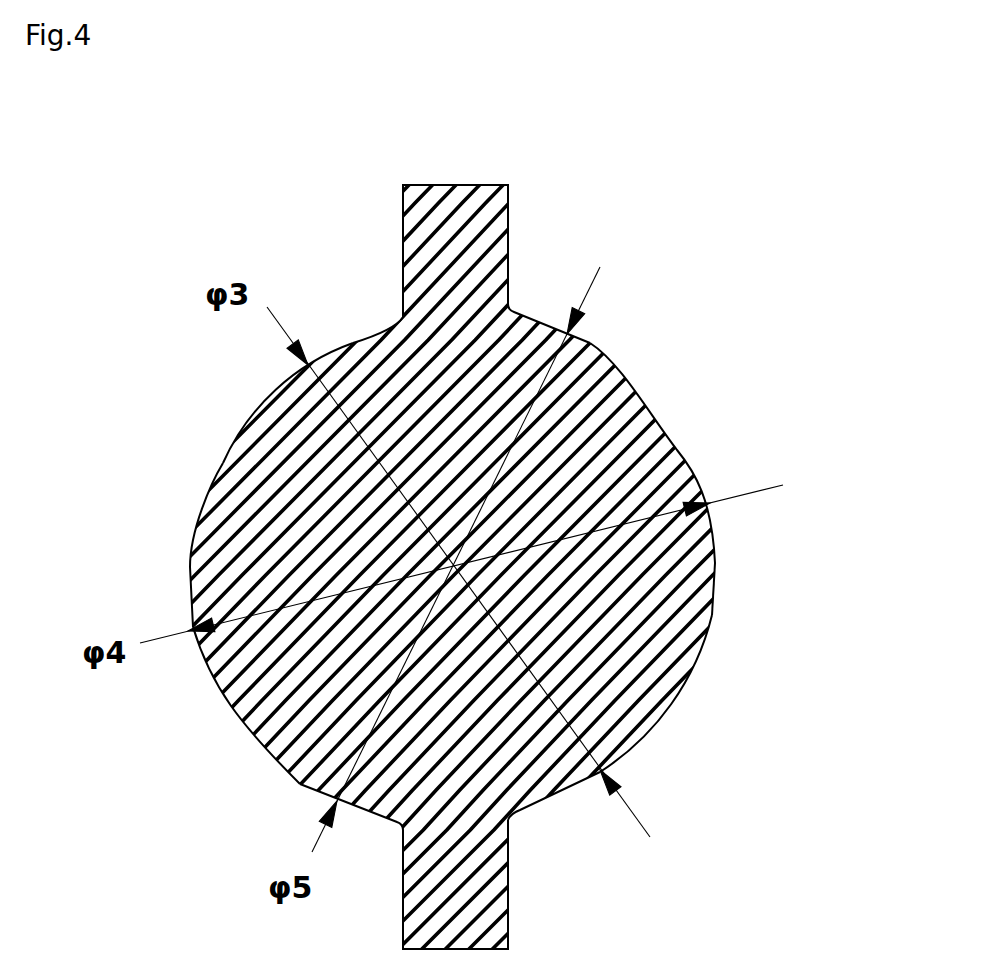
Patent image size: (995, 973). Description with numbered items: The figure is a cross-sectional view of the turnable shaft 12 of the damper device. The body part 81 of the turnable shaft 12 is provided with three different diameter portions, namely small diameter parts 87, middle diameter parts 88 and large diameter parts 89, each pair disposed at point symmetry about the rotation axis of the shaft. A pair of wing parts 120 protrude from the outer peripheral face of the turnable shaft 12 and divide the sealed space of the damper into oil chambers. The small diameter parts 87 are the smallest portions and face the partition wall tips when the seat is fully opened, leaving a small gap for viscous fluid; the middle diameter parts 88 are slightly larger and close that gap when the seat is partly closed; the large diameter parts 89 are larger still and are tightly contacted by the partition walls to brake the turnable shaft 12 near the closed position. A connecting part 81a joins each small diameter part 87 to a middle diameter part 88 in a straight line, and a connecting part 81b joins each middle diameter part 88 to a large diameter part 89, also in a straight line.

The turnable shaft 12 is at (577, 132).
The body part 81 is at (718, 567).
The wing part 120 is at (470, 290).
The small diameter part 87 is at (355, 343).
The large diameter part 89 is at (590, 346).
The connecting part 81a is at (206, 429).
The connecting part 81b is at (680, 399).
The middle diameter part 88 is at (191, 550).